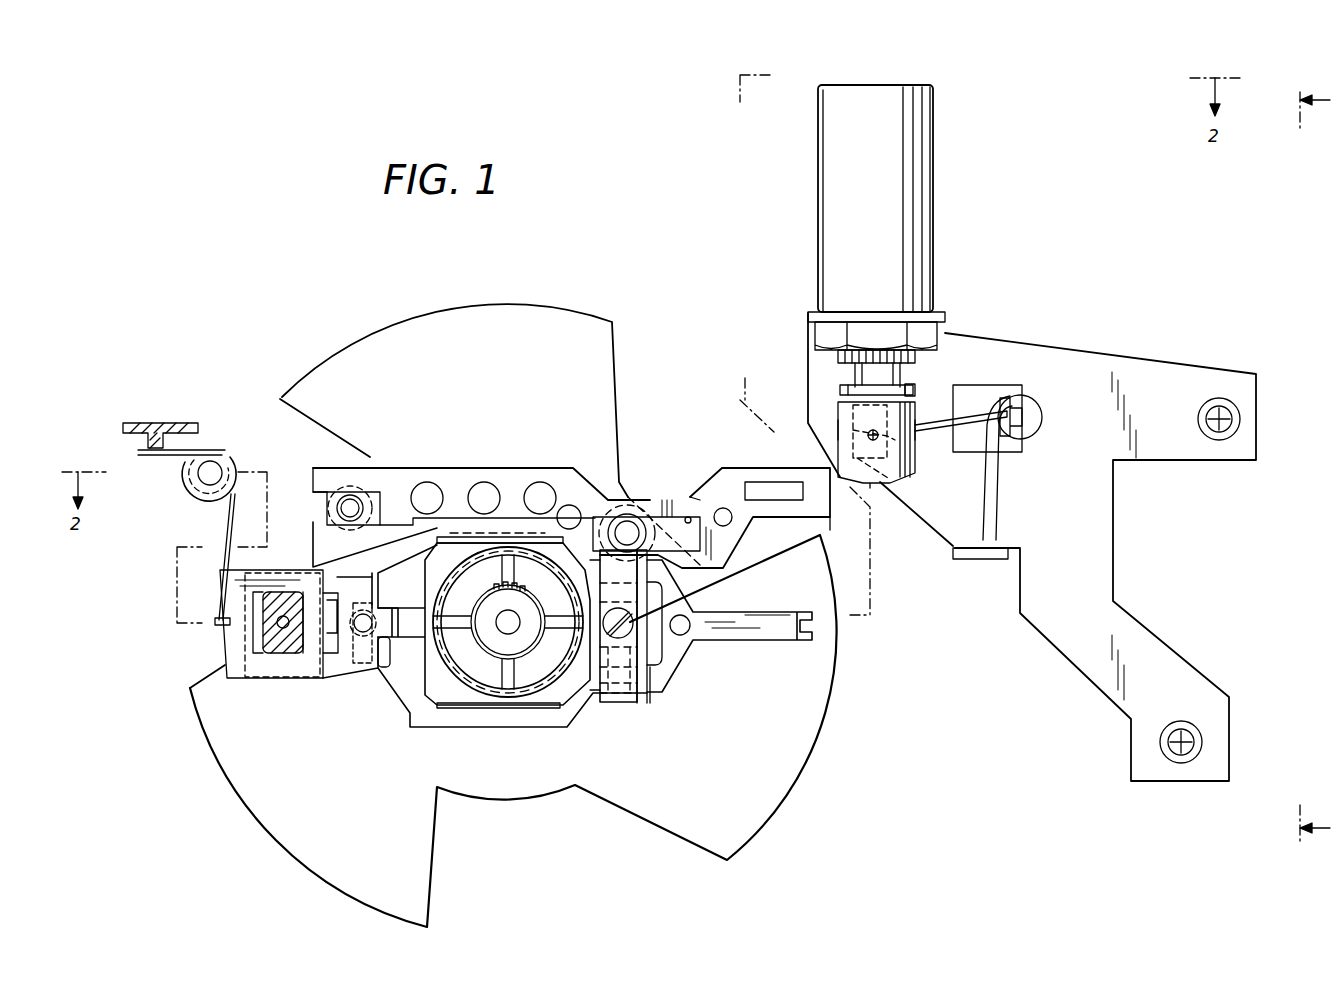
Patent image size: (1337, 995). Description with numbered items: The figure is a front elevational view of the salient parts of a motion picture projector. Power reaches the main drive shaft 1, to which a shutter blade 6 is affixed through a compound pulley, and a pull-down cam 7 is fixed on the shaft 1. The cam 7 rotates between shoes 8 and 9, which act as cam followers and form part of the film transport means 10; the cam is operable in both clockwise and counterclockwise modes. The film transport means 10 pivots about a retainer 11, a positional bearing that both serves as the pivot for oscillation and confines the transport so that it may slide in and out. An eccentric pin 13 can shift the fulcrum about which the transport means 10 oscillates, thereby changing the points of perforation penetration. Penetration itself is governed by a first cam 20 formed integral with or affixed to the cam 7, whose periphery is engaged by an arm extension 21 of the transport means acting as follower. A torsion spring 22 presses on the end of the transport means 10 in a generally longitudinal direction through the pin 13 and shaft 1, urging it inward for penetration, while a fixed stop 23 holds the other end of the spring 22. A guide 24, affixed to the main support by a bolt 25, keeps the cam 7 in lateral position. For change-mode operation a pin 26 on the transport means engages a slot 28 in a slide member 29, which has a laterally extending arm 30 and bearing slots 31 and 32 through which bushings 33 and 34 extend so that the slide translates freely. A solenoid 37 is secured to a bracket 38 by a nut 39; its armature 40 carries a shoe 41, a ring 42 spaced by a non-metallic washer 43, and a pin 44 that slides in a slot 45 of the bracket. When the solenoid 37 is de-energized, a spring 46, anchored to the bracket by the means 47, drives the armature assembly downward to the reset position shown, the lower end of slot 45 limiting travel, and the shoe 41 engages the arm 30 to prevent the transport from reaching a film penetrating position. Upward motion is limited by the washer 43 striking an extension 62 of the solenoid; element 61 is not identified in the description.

The main drive shaft 1 is at (498, 620).
The shutter blade 6 is at (817, 689).
The cam 7 is at (563, 673).
The shoe 8 is at (547, 538).
The shoe 9 is at (562, 712).
The film transport means 10 is at (757, 640).
The retainer 11 is at (290, 645).
The pin 13 is at (285, 600).
The first cam 20 is at (470, 677).
The arm extension 21 is at (408, 620).
The torsion spring 22 is at (228, 505).
The stop 23 is at (160, 423).
The guide 24 is at (610, 648).
The bolt 25 is at (700, 607).
The pin 26 is at (370, 632).
The slot 28 is at (363, 630).
The slide member 29 is at (480, 492).
The arm 30 is at (833, 512).
The bearing slot 31 is at (313, 490).
The bearing slot 32 is at (688, 517).
The bushing 33 is at (350, 508).
The bushing 34 is at (628, 533).
The solenoid 37 is at (923, 213).
The bracket 38 is at (1035, 353).
The nut 39 is at (922, 332).
The armature 40 is at (903, 375).
The shoe 41 is at (915, 472).
The ring 42 is at (912, 394).
The non-metallic washer 43 is at (907, 387).
The pin 44 is at (940, 427).
The slot 45 is at (838, 410).
The spring 46 is at (988, 498).
The anchoring means 47 is at (1016, 427).
The block 61 is at (903, 482).
The extension 62 is at (840, 358).